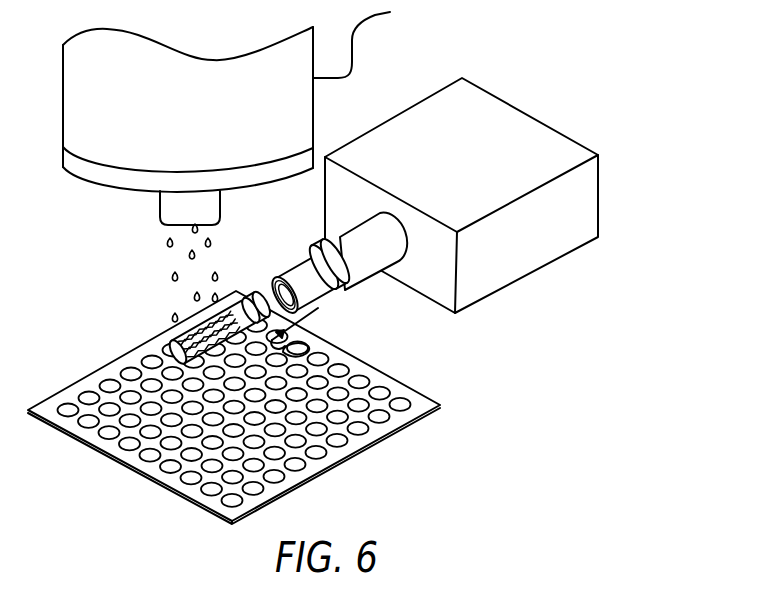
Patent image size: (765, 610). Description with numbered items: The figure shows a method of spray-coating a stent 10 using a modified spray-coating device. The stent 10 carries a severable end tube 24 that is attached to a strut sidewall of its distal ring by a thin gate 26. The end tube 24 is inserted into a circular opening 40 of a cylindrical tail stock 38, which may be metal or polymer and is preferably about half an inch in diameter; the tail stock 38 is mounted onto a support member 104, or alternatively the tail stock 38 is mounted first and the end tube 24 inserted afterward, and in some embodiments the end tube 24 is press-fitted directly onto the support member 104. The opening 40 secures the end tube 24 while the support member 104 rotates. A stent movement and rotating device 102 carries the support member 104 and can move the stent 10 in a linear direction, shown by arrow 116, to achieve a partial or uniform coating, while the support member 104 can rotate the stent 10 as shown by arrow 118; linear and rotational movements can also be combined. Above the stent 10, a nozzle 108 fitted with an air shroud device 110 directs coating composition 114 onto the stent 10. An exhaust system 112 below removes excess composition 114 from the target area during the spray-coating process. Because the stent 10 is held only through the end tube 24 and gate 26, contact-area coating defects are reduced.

The stent 10 is at (203, 327).
The end tube 24 is at (289, 333).
The gate 26 is at (253, 308).
The tail stock 38 is at (297, 270).
The circular opening 40 is at (273, 280).
The stent movement and rotating device 102 is at (510, 135).
The support member 104 is at (380, 252).
The nozzle 108 is at (246, 96).
The air shroud device 110 is at (210, 208).
The exhaust system 112 is at (338, 462).
The composition 114 is at (152, 277).
The arrow 116 is at (302, 355).
The arrow 118 is at (346, 263).